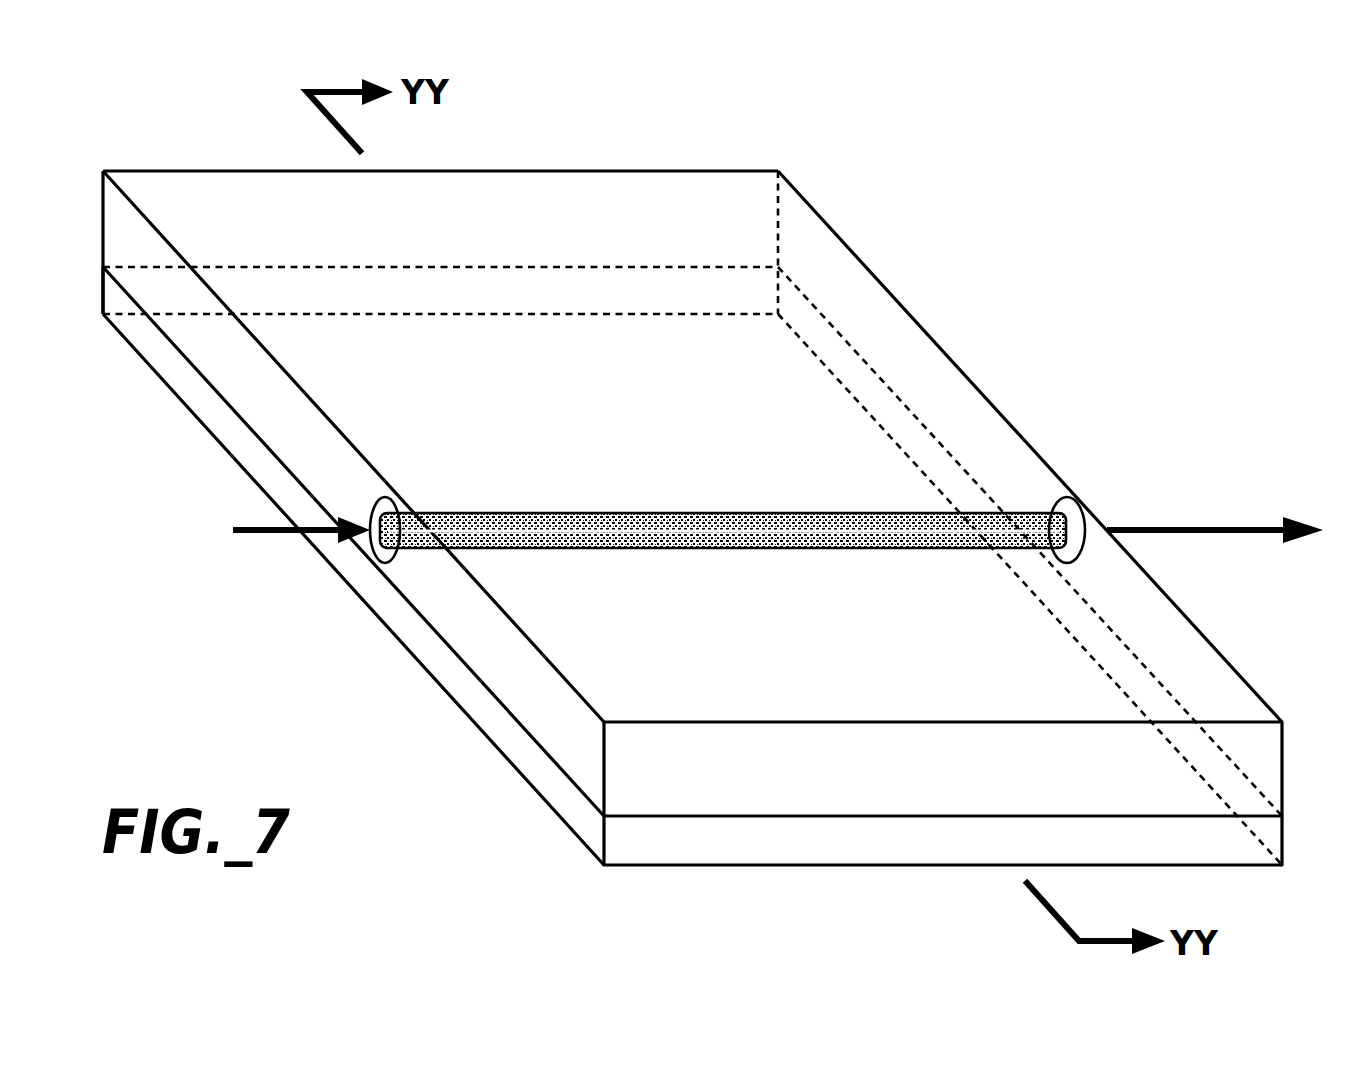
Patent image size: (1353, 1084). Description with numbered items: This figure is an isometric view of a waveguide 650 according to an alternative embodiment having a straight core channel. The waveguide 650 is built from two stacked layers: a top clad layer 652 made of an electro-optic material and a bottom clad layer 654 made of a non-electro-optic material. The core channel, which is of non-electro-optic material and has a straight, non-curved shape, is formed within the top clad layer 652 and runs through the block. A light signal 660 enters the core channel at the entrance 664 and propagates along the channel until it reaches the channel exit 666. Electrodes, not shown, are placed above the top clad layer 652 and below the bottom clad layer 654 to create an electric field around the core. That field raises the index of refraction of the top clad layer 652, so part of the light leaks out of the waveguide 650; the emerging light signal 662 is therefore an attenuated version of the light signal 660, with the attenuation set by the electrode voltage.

The waveguide 650 is at (512, 512).
The top clad layer 652 is at (711, 188).
The bottom clad layer 654 is at (298, 290).
The light signal 660 is at (250, 535).
The light signal 662 is at (1163, 527).
The entrance 664 is at (383, 497).
The channel exit 666 is at (1052, 505).